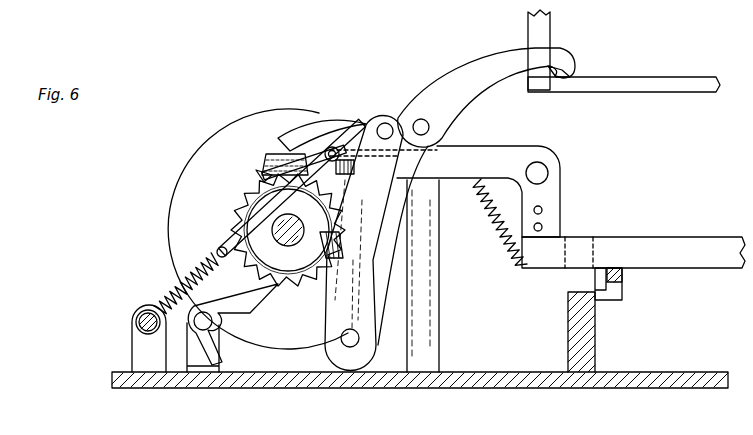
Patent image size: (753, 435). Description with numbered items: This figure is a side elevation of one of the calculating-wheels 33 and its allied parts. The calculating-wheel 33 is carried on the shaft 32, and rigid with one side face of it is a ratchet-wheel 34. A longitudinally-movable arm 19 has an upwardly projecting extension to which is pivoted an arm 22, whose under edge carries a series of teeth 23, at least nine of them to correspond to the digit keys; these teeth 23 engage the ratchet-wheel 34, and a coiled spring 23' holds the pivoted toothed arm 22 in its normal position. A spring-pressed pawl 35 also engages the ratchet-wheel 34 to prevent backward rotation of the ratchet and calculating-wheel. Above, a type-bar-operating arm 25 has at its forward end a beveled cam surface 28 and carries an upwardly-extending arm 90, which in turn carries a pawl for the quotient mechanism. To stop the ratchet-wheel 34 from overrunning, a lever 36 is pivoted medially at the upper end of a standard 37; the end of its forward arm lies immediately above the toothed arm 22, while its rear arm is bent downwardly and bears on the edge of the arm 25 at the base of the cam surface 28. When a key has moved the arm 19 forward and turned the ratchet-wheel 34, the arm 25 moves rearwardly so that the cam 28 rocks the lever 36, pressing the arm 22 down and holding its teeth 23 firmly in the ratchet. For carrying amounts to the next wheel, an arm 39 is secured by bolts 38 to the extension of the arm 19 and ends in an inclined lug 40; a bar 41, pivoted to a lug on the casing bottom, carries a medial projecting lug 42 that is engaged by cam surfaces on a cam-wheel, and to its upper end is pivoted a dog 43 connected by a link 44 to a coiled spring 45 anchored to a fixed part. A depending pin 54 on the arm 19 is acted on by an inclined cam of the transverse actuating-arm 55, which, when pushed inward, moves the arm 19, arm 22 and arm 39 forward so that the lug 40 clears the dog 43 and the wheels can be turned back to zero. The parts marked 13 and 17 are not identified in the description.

The base plate 13 is at (562, 388).
The upright support post 17 is at (590, 352).
The longitudinally-movable arm 19 is at (677, 238).
The pivoted toothed arm 22 is at (272, 154).
The teeth 23 is at (244, 162).
The coiled spring 23' is at (492, 227).
The type-bar-operating arm 25 is at (657, 78).
The cam surface 28 is at (560, 70).
The shaft 32 is at (290, 246).
The calculating-wheel 33 is at (169, 237).
The ratchet-wheel 34 is at (234, 213).
The spring-pressed pawl 35 is at (262, 300).
The lever 36 is at (462, 80).
The standard 37 is at (440, 321).
The bolts 38 is at (545, 228).
The arm 39 is at (511, 146).
The inclined lug 40 is at (328, 148).
The bar 41 is at (397, 312).
The lug 42 is at (340, 232).
The dog 43 is at (350, 172).
The link 44 is at (268, 205).
The coiled spring 45 is at (171, 294).
The depending pin 54 is at (603, 292).
The actuating-arm 55 is at (623, 280).
The upwardly-extending arm 90 is at (544, 28).